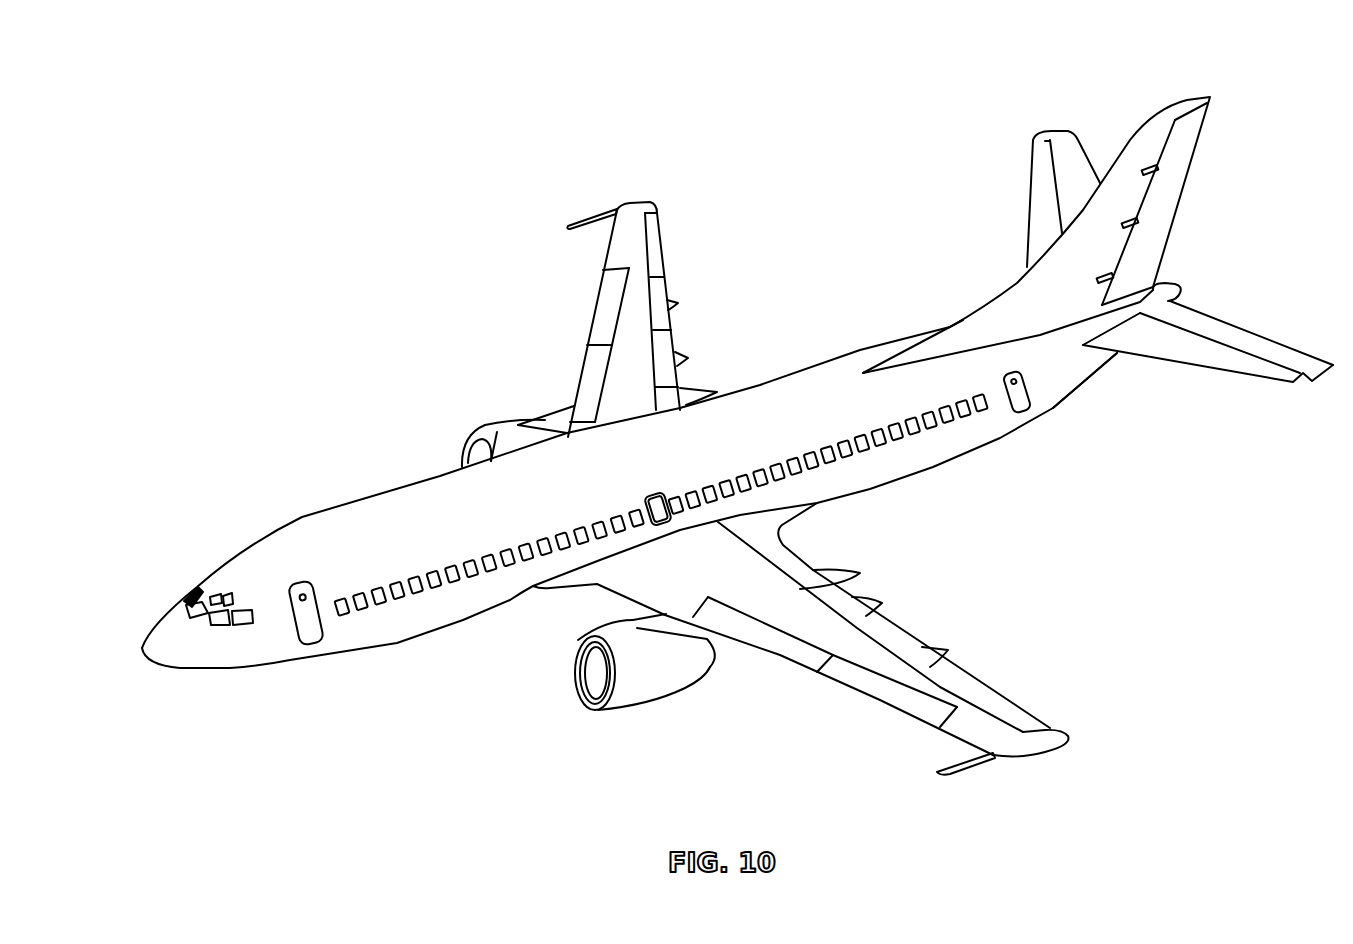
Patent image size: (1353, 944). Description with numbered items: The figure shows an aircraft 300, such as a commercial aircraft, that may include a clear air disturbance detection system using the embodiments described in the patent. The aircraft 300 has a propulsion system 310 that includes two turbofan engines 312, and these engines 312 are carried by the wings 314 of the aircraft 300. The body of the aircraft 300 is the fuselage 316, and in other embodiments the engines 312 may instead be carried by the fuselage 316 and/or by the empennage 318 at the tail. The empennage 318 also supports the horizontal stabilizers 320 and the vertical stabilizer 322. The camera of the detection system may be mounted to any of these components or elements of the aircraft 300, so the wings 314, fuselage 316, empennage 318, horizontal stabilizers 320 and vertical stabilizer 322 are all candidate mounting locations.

The aircraft 300 is at (524, 254).
The propulsion system 310 is at (558, 684).
The turbofan engines 312 is at (662, 676).
The wings 314 is at (630, 217).
The fuselage 316 is at (383, 625).
The empennage 318 is at (862, 330).
The horizontal stabilizers 320 is at (1063, 140).
The vertical stabilizer 322 is at (1155, 125).